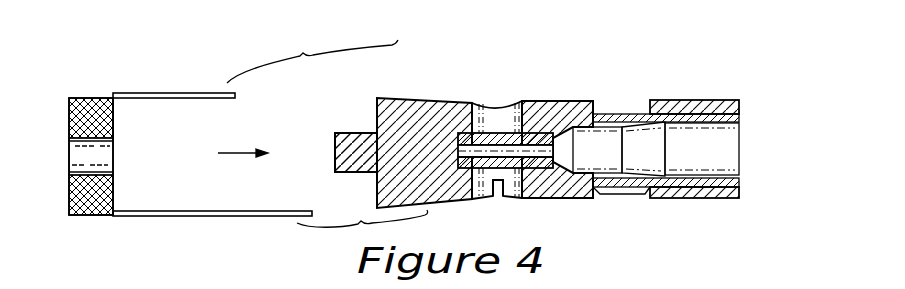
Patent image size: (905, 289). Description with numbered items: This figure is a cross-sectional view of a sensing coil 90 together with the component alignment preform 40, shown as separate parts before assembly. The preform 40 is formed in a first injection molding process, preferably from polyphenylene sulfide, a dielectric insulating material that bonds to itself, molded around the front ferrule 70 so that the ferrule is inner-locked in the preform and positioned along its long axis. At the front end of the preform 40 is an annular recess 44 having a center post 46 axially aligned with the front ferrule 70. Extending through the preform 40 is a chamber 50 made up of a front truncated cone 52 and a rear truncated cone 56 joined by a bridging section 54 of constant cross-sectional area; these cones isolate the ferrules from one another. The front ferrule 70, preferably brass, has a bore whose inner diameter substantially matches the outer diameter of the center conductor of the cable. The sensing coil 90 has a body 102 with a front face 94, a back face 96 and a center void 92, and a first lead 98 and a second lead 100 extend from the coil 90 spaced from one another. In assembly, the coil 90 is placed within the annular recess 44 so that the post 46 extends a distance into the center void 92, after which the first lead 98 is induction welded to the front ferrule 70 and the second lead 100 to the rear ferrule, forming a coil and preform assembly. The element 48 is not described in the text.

The component alignment preform 40 is at (505, 85).
The annular recess 44 is at (358, 125).
The center post 46 is at (335, 170).
The retaining ring 48 is at (740, 108).
The chamber 50 is at (713, 163).
The front truncated cone 52 is at (565, 146).
The bridging section 54 is at (600, 148).
The rear truncated cone 56 is at (647, 140).
The front ferrule 70 is at (484, 198).
The sensing coil 90 is at (87, 90).
The center void 92 is at (68, 162).
The front face 94 is at (70, 130).
The back face 96 is at (113, 115).
The first lead 98 is at (142, 93).
The second lead 100 is at (212, 216).
The body 102 is at (97, 215).